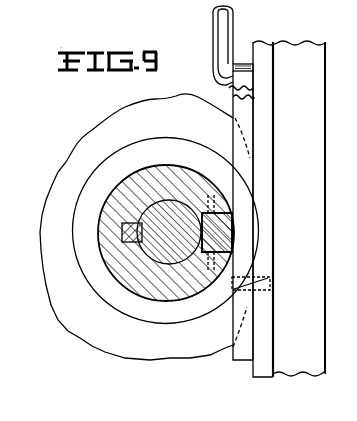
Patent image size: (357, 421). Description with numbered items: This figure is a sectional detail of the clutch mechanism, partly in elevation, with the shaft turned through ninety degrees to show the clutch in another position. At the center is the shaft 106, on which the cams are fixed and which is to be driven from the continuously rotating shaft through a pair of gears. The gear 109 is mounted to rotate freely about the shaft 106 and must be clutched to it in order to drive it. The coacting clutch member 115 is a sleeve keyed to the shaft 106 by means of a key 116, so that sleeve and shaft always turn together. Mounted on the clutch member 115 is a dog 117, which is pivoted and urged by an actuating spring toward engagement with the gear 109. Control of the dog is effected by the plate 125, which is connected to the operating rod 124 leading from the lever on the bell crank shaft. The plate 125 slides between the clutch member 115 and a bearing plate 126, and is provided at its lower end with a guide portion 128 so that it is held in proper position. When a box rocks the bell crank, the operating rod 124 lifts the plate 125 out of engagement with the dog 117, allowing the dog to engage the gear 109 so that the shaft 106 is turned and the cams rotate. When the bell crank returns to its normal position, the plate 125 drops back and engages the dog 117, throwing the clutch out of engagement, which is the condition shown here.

The gear 109 is at (100, 125).
The shaft 106 is at (152, 263).
The clutch member 115 is at (172, 292).
The key 116 is at (122, 229).
The dog 117 is at (232, 236).
The guide portion 128 is at (243, 353).
The bearing plate 126 is at (270, 184).
The operating rod 124 is at (213, 28).
The plate 125 is at (233, 94).